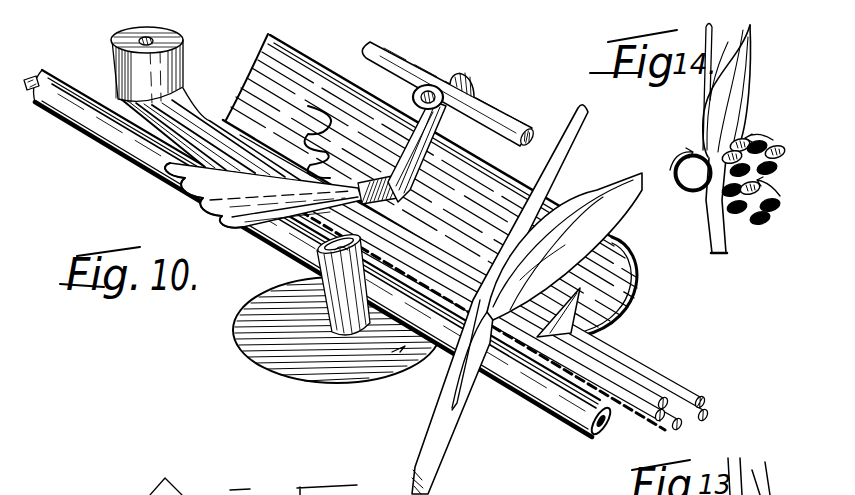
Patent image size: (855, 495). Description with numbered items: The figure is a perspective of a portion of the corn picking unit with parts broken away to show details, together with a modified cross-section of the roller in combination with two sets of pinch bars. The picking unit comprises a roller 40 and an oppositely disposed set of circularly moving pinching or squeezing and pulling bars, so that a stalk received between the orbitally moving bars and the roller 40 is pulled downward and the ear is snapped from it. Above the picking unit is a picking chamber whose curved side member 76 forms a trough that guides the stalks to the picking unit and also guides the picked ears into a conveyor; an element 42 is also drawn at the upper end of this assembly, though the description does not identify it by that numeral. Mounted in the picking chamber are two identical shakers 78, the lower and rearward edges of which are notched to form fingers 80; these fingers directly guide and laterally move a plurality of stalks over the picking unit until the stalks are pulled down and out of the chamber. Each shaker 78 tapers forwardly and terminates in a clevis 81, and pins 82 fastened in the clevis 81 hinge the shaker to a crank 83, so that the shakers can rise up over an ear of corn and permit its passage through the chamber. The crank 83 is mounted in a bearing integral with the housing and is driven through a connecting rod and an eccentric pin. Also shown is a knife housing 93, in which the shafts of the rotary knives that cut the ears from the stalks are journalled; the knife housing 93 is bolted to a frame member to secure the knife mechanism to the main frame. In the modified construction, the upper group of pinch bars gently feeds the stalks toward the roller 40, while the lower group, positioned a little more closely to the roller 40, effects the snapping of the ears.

The roller 40 is at (544, 400).
The cylindrical hopper 42 is at (192, 70).
The curved side member 76 is at (637, 274).
The shaker 78 is at (238, 225).
The fingers 80 is at (180, 190).
The clevis 81 is at (474, 80).
The pins 82 is at (433, 86).
The crank 83 is at (500, 123).
The knife housing 93 is at (320, 280).